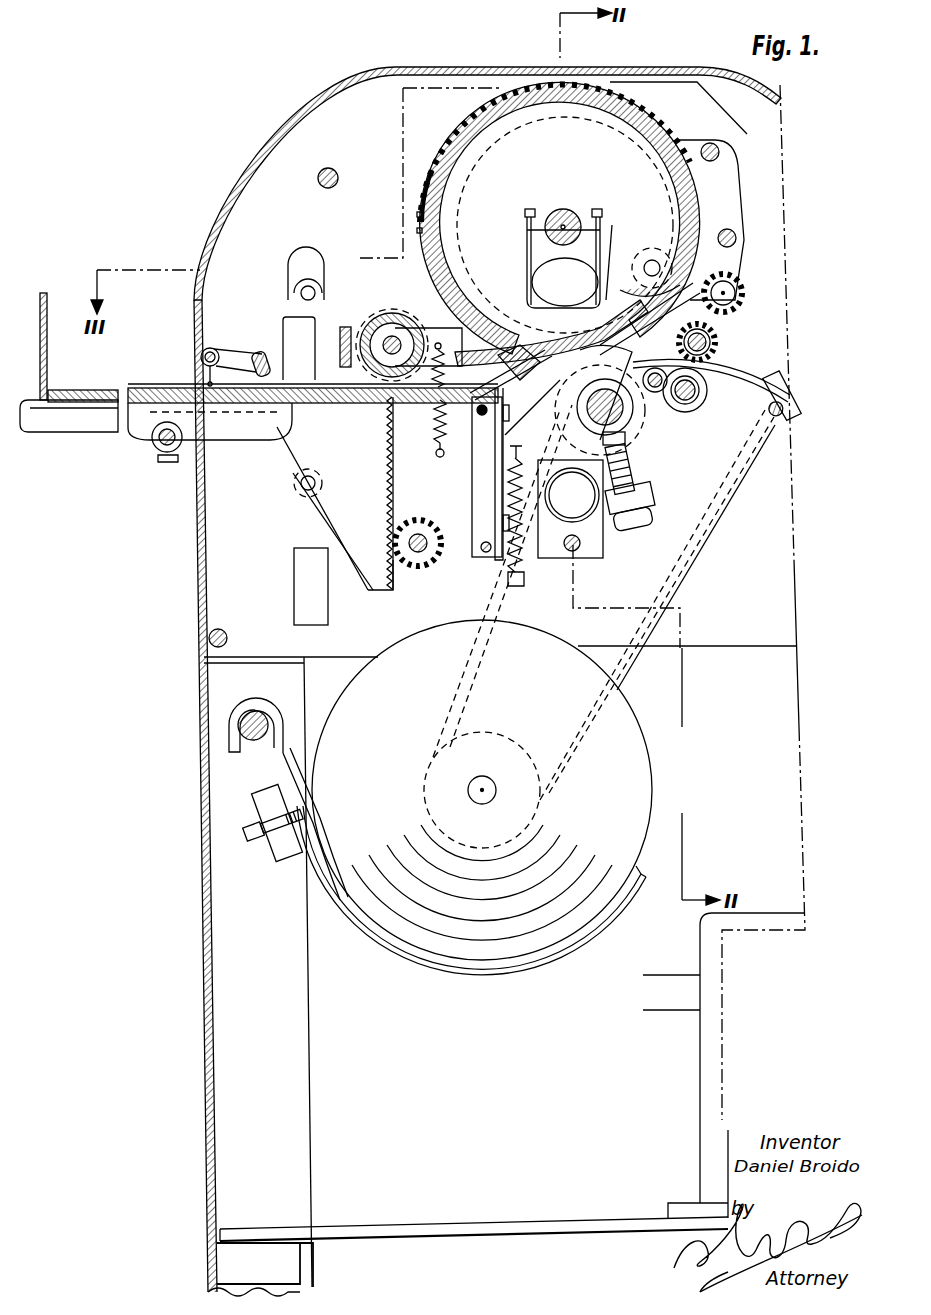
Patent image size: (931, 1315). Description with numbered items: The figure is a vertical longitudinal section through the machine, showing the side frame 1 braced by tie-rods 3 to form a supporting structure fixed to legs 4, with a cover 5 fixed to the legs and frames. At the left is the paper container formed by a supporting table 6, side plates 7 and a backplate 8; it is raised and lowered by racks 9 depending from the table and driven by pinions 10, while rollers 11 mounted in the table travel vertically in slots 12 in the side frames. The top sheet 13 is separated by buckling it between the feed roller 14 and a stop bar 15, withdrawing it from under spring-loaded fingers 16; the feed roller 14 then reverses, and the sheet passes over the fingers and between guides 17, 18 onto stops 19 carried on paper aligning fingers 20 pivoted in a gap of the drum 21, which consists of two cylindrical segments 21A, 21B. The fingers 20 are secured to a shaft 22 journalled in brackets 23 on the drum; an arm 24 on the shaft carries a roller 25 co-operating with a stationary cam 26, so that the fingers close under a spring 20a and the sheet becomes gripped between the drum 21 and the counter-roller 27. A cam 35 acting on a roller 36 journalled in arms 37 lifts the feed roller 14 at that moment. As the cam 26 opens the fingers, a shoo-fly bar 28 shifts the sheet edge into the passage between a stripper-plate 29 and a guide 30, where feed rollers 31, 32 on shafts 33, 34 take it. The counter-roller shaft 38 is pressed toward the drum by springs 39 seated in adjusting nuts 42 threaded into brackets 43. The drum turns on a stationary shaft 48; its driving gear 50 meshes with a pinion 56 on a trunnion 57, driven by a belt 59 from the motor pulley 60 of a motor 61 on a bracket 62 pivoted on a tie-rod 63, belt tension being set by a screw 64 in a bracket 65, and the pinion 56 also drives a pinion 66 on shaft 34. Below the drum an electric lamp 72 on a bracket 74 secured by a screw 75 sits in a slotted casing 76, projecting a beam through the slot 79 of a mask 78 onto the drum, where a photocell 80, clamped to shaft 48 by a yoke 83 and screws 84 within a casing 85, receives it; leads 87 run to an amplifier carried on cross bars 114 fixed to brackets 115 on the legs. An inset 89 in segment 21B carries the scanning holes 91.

The side frame 1 is at (222, 528).
The tie-rod 3 is at (328, 168).
The leg 4 is at (222, 883).
The cover 5 is at (395, 68).
The supporting table 6 is at (30, 405).
The side plate 7 is at (290, 325).
The backplate 8 is at (47, 315).
The rack 9 is at (390, 483).
The pinion 10 is at (420, 535).
The roller 11 is at (300, 282).
The slot 12 is at (305, 262).
The top sheet 13 is at (136, 386).
The feed roller 14 is at (382, 320).
The stop bar 15 is at (261, 352).
The spring-loaded finger 16 is at (454, 421).
The guide 17 is at (445, 365).
The guide 18 is at (455, 439).
The stop 19 is at (590, 398).
The paper aligning finger 20 is at (625, 412).
The spring 20a is at (598, 215).
The drum 21 is at (636, 88).
The cylindrical segment 21A is at (485, 100).
The cylindrical segment 21B is at (432, 166).
The shaft 22 is at (643, 282).
The bracket 23 is at (612, 225).
The arm 24 is at (625, 285).
The roller 25 is at (655, 260).
The stationary cam 26 is at (725, 210).
The counter-roller 27 is at (618, 425).
The shoo-fly bar 28 is at (580, 545).
The stripper-plate 29 is at (665, 300).
The guide 30 is at (658, 392).
The feed roller 31 is at (702, 405).
The feed roller 32 is at (720, 335).
The shaft 33 is at (705, 392).
The shaft 34 is at (716, 343).
The cam 35 is at (590, 116).
The roller 36 is at (545, 330).
The arm 37 is at (440, 330).
The shaft 38 is at (620, 420).
The spring 39 is at (632, 470).
The adjusting nut 42 is at (652, 520).
The bracket 43 is at (650, 495).
The stationary shaft 48 is at (596, 210).
The driving gear 50 is at (640, 96).
The pinion 56 is at (747, 290).
The trunnion 57 is at (725, 272).
The belt 59 is at (730, 523).
The motor pulley 60 is at (640, 820).
The motor 61 is at (636, 782).
The bracket 62 is at (248, 730).
The tie-rod 63 is at (285, 765).
The screw 64 is at (250, 835).
The bracket 65 is at (270, 797).
The pinion 66 is at (712, 360).
The electric lamp 72 is at (500, 545).
The bracket 74 is at (520, 562).
The screw 75 is at (576, 560).
The casing 76 is at (500, 570).
The mask 78 is at (520, 375).
The slot 79 is at (555, 400).
The photocell 80 is at (540, 275).
The yoke 83 is at (563, 210).
The screw 84 is at (528, 210).
The casing 85 is at (527, 248).
The lead 87 is at (671, 992).
The inset 89 is at (418, 218).
The scanning hole 91 is at (420, 222).
The cross bar 114 is at (512, 1228).
The bracket 115 is at (280, 1270).